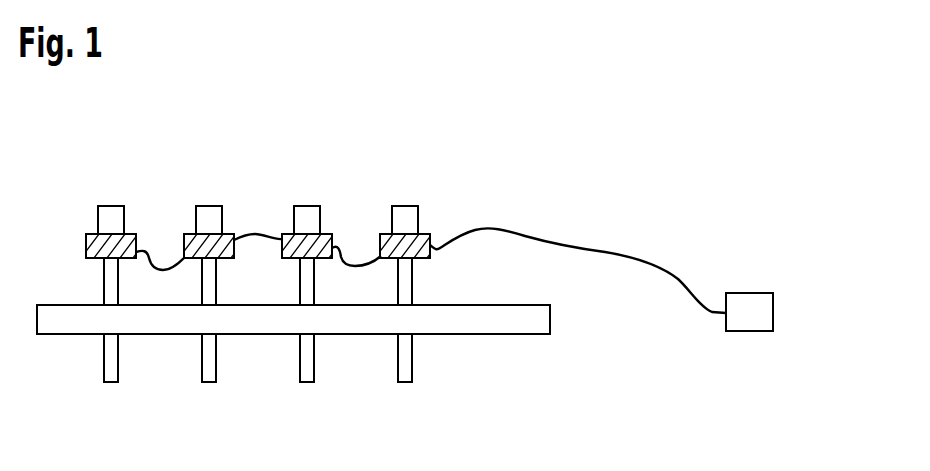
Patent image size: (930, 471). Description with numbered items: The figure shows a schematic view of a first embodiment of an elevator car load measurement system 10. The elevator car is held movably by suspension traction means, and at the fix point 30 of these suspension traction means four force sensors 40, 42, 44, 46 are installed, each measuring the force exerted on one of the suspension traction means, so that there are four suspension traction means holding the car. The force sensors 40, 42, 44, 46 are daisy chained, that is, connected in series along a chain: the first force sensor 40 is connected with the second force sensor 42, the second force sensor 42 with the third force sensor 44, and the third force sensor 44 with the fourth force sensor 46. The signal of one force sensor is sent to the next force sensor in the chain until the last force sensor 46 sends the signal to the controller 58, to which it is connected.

The elevator car load measurement system 10 is at (511, 165).
The fix point 30 is at (492, 334).
The first force sensor 40 is at (93, 236).
The second force sensor 42 is at (191, 236).
The third force sensor 44 is at (289, 236).
The fourth force sensor 46 is at (388, 238).
The controller 58 is at (745, 331).